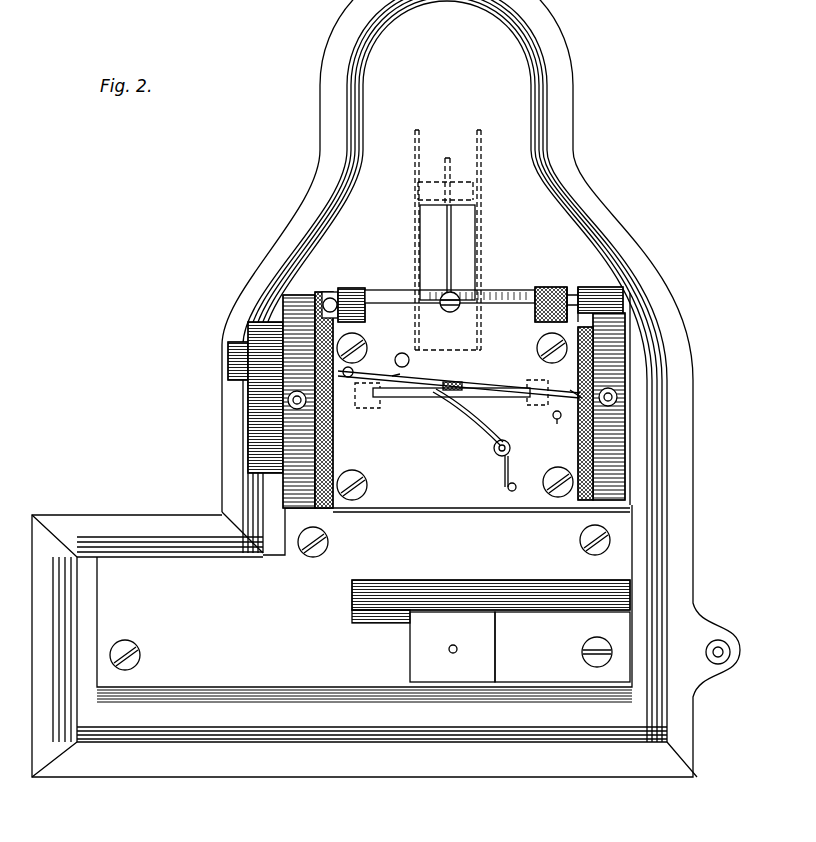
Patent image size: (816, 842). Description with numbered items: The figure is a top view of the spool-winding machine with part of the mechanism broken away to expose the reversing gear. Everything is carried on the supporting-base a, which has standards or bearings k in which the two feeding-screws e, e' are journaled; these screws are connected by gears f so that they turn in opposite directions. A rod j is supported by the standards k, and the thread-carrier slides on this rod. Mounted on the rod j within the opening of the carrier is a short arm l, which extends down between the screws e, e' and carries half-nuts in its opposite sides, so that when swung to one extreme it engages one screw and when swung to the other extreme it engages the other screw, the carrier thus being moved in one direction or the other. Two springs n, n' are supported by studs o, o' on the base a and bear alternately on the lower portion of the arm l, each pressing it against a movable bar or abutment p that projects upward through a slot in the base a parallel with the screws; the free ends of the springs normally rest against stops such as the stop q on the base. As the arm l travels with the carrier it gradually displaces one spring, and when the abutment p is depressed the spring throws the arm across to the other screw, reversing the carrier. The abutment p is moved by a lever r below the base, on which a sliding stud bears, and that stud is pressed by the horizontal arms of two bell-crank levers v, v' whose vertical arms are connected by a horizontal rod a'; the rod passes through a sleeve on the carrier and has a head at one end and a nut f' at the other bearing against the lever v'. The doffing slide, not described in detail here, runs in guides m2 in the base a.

The supporting-base a is at (457, 521).
The guides m2 is at (545, 587).
The gears f is at (240, 390).
The standards k is at (697, 367).
The feeding-screw e is at (333, 400).
The rod j is at (322, 392).
The horizontal rod a' is at (343, 289).
The bell-crank lever v is at (450, 284).
The pivot pin u' is at (443, 288).
The striker housing s is at (480, 232).
The lever r is at (454, 258).
The bell-crank lever v' is at (569, 292).
The nut f' is at (588, 276).
The movable bar or abutment p is at (406, 398).
The short arm l is at (452, 384).
The spring n' is at (533, 378).
The spring n is at (468, 417).
The stud o is at (496, 465).
The feeding-screw e' is at (362, 364).
The stud o' is at (403, 348).
The stop q is at (390, 376).
The stop pin g' is at (556, 428).